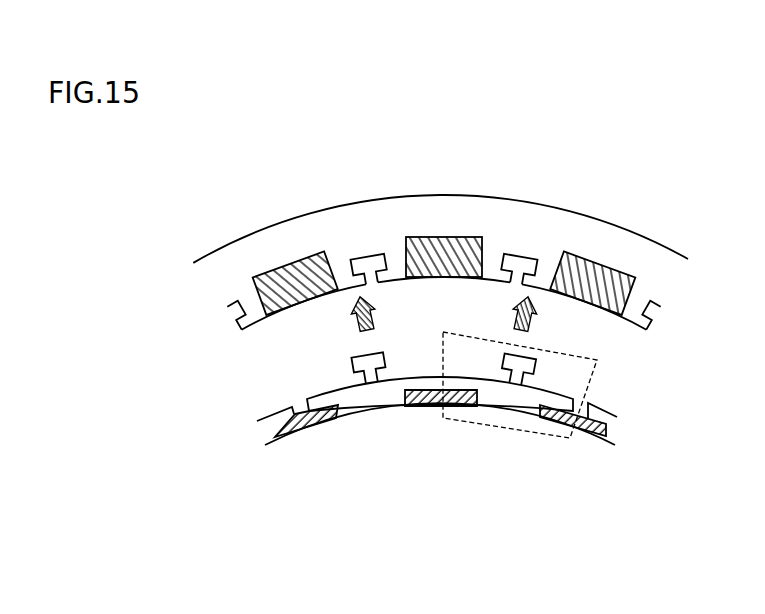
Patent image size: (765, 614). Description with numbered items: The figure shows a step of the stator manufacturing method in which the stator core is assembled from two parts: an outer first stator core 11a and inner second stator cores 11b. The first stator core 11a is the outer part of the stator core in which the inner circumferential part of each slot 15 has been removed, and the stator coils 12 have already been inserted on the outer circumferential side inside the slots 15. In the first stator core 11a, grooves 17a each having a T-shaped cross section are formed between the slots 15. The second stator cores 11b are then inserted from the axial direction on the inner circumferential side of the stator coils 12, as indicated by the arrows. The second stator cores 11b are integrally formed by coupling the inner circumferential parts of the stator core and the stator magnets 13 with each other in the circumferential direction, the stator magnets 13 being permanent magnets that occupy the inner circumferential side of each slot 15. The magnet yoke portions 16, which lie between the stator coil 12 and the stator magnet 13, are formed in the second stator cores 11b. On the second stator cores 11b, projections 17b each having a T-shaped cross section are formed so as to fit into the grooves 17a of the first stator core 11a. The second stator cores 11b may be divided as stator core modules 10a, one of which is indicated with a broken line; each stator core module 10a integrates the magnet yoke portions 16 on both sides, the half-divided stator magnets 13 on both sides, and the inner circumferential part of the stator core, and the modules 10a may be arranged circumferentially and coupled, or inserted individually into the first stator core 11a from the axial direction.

The first stator core 11a is at (347, 208).
The stator coil 12 is at (460, 250).
The slot 15 is at (440, 237).
The groove 17a is at (517, 265).
The projection 17b is at (533, 382).
The second stator core 11b is at (508, 397).
The magnet yoke portion 16 is at (460, 407).
The stator magnet 13 is at (425, 407).
The stator core module 10a is at (555, 432).